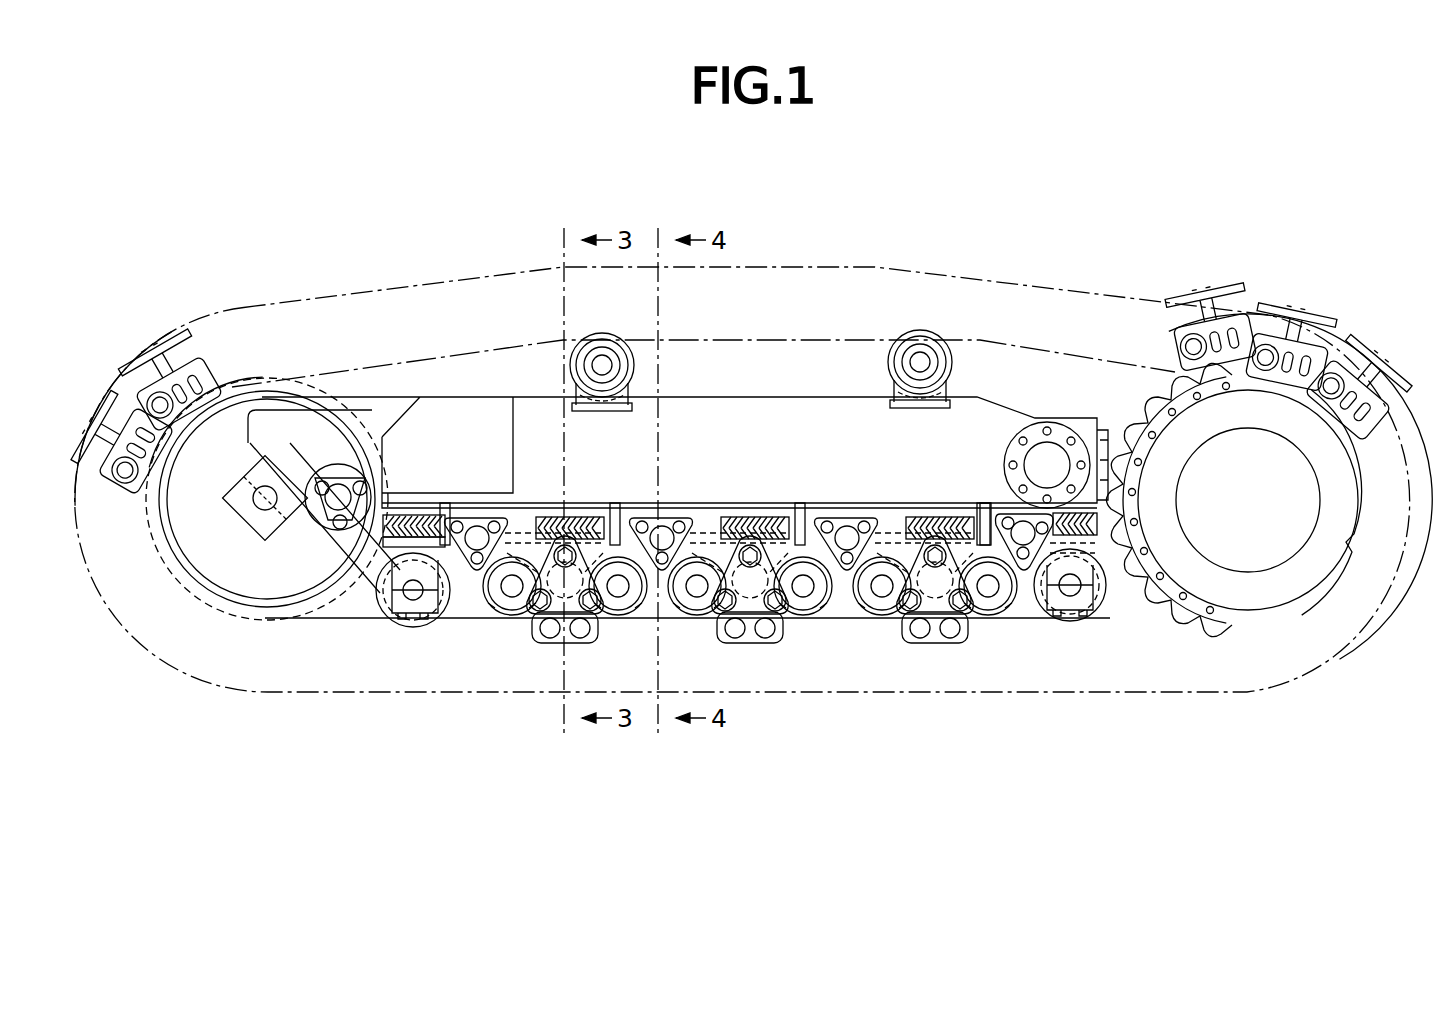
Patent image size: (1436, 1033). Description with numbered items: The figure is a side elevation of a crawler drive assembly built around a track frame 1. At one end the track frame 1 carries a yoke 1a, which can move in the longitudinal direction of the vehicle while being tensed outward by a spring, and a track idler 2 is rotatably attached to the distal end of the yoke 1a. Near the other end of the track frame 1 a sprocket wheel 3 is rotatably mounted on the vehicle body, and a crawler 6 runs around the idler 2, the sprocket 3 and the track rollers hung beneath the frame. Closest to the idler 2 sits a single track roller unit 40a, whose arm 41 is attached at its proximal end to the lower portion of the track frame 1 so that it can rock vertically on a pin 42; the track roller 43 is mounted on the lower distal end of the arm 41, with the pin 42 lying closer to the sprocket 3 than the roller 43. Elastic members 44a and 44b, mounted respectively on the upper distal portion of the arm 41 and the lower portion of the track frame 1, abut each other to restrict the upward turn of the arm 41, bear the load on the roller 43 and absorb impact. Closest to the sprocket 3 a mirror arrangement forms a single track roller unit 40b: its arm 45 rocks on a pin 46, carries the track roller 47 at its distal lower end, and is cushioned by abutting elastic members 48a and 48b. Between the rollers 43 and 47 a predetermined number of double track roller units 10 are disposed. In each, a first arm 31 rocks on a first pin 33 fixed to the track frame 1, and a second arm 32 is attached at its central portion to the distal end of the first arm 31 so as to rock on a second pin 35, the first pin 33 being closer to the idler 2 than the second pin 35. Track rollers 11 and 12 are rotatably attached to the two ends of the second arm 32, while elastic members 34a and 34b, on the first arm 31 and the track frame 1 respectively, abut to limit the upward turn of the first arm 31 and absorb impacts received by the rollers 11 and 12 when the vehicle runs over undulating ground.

The track frame 1 is at (765, 410).
The yoke 1a is at (347, 395).
The track idler 2 is at (225, 580).
The sprocket wheel 3 is at (1230, 580).
The crawler 6 is at (1258, 330).
The double track roller unit 10 is at (746, 673).
The track roller 11 is at (926, 664).
The track roller 12 is at (942, 648).
The first arm 31 is at (882, 675).
The second arm 32 is at (1003, 675).
The first pin 33 is at (846, 655).
The elastic member 34a is at (877, 525).
The elastic member 34b is at (960, 510).
The second pin 35 is at (937, 702).
The single track roller unit 40a is at (345, 515).
The single track roller unit 40b is at (1087, 673).
The arm 41 is at (363, 545).
The pin 42 is at (320, 525).
The track roller 43 is at (450, 617).
The elastic member 44a is at (398, 520).
The elastic member 44b is at (428, 560).
The arm 45 is at (1093, 600).
The pin 46 is at (1032, 600).
The track roller 47 is at (1123, 600).
The elastic member 48a is at (1165, 392).
The elastic member 48b is at (1118, 495).